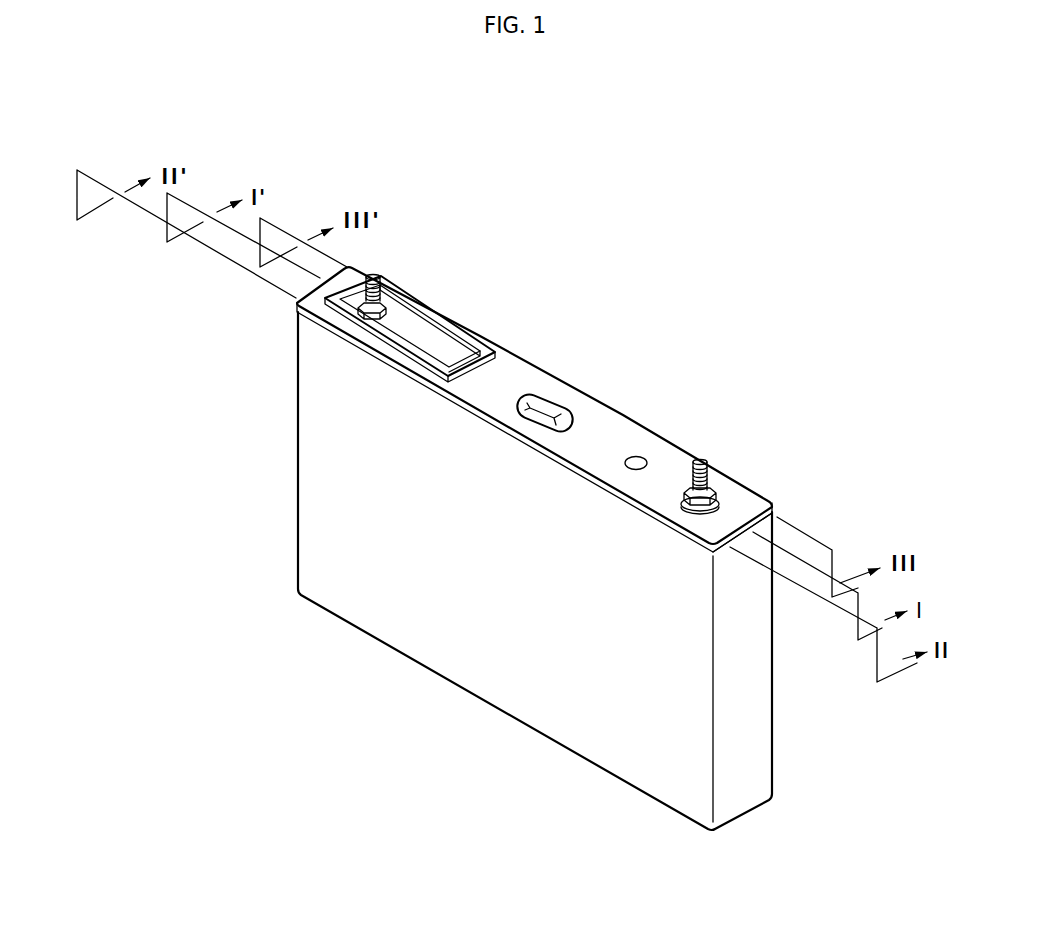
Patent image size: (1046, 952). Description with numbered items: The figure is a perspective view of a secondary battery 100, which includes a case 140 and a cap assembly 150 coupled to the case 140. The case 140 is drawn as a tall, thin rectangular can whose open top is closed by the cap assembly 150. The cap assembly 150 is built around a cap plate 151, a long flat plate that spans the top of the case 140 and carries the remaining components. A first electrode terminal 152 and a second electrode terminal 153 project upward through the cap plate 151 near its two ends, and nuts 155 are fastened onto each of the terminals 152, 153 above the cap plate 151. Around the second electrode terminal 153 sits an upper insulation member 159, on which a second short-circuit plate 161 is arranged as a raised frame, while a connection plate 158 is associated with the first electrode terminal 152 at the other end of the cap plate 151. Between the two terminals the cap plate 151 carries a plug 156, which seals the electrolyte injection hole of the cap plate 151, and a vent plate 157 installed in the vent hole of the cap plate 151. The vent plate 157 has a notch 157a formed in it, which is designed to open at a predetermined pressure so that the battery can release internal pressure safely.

The secondary battery 100 is at (575, 252).
The case 140 is at (485, 688).
The cap assembly 150 is at (626, 412).
The cap plate 151 is at (508, 373).
The first electrode terminal 152 is at (702, 460).
The second electrode terminal 153 is at (378, 274).
The nuts 155 is at (356, 314).
The plug 156 is at (643, 457).
The vent plate 157 is at (548, 400).
The notch 157a is at (557, 410).
The connection plate 158 is at (752, 530).
The upper insulation member 159 is at (463, 328).
The second short-circuit plate 161 is at (422, 338).